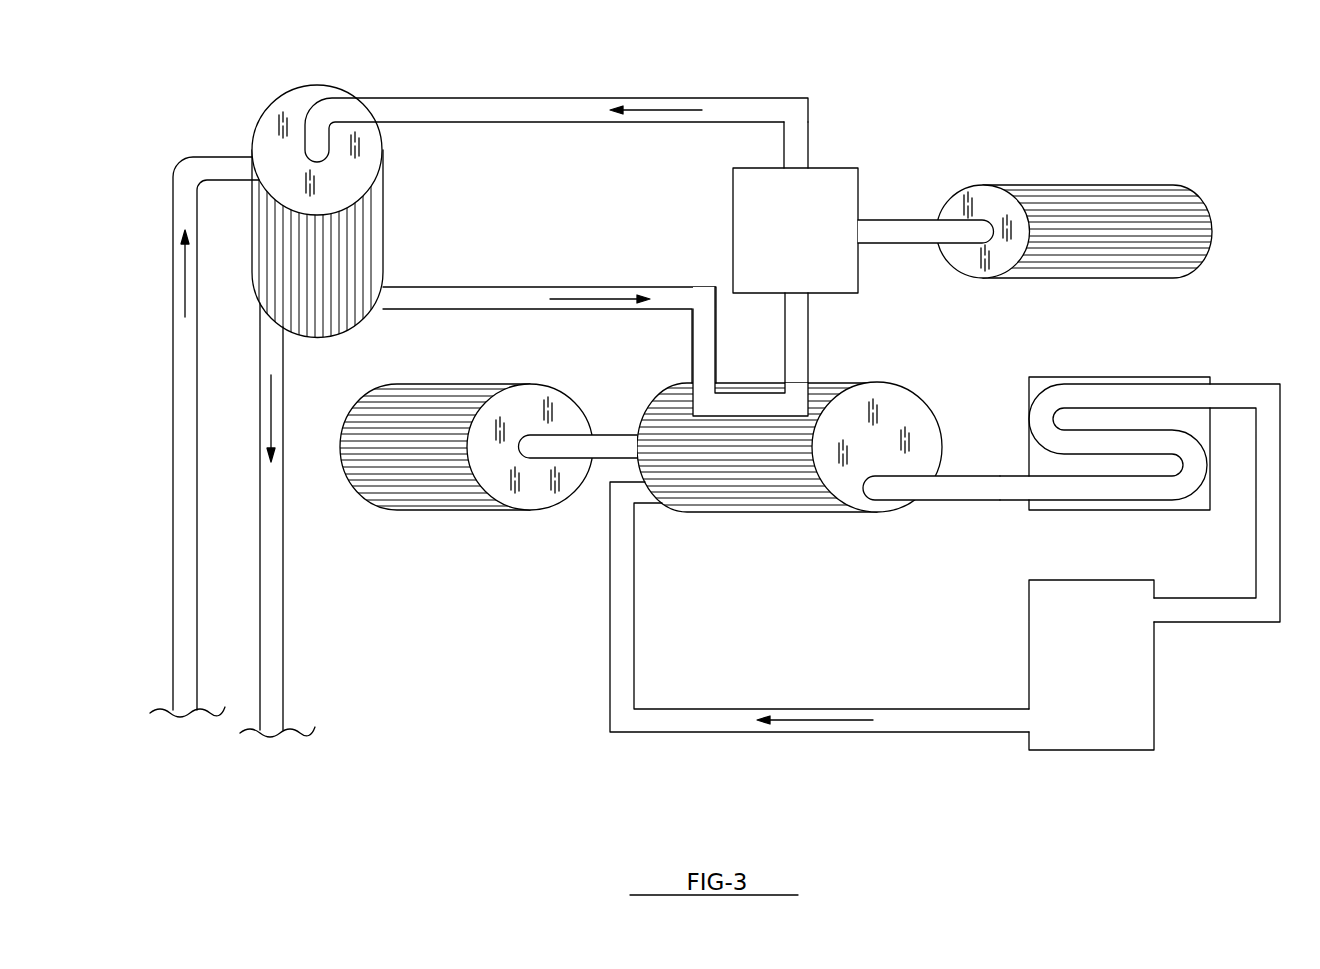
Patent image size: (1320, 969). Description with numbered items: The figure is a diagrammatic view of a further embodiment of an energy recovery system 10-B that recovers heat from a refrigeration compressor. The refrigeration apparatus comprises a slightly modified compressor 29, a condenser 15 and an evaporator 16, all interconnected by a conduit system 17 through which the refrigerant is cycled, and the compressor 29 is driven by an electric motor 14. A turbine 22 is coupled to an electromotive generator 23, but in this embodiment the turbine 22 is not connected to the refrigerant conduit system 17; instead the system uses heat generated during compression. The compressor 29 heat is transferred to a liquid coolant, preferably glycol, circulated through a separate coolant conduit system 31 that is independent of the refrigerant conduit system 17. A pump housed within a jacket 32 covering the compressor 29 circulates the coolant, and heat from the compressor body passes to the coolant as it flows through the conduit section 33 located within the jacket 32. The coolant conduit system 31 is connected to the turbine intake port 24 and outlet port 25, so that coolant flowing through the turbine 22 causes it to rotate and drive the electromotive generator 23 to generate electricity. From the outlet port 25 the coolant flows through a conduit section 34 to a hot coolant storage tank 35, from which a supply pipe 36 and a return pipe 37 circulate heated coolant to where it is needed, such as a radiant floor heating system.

The energy recovery system 10-B is at (689, 425).
The electric motor 14 is at (447, 500).
The condenser 15 is at (1130, 679).
The evaporator 16 is at (1160, 377).
The conduit system 17 is at (910, 733).
The turbine 22 is at (845, 192).
The electromotive generator 23 is at (1133, 193).
The intake port 24 is at (797, 298).
The outlet port 25 is at (797, 168).
The compressor 29 is at (757, 500).
The conduit system 31 is at (520, 287).
The jacket 32 is at (789, 458).
The section 33 is at (732, 408).
The conduit section 34 is at (538, 106).
The hot coolant storage tank 35 is at (372, 210).
The supply pipe 36 is at (277, 607).
The return pipe 37 is at (183, 520).